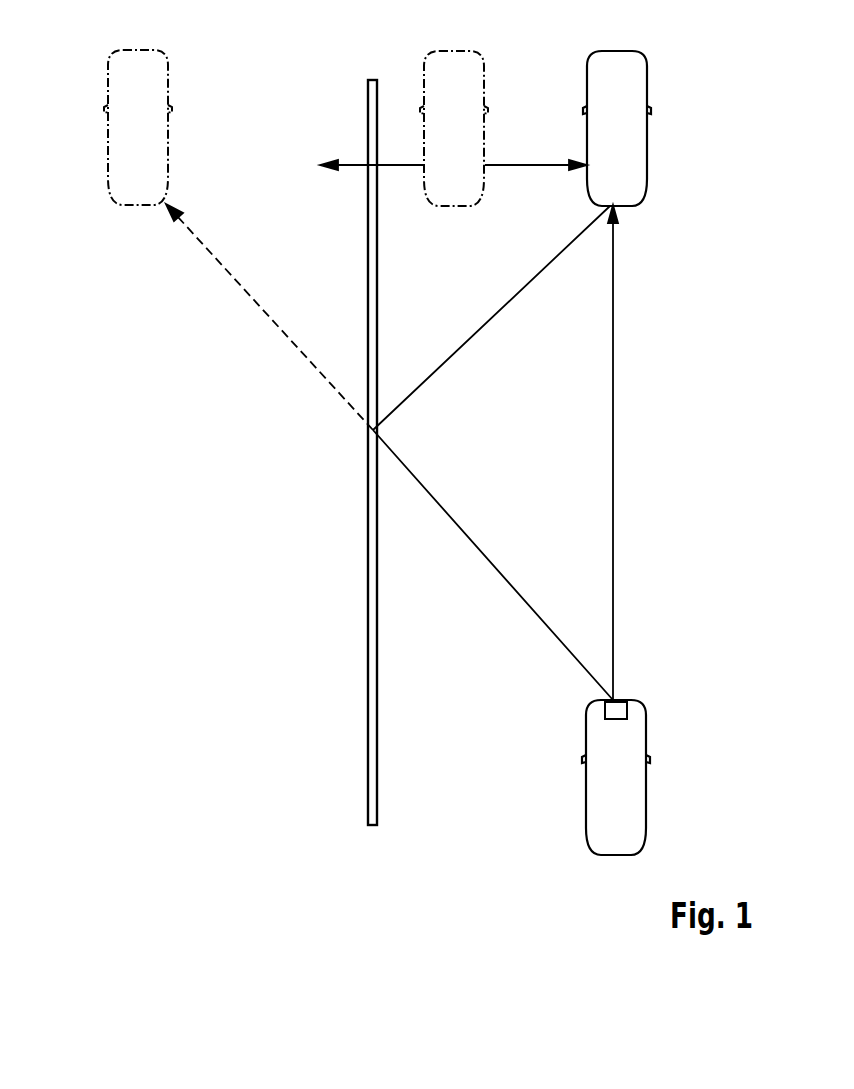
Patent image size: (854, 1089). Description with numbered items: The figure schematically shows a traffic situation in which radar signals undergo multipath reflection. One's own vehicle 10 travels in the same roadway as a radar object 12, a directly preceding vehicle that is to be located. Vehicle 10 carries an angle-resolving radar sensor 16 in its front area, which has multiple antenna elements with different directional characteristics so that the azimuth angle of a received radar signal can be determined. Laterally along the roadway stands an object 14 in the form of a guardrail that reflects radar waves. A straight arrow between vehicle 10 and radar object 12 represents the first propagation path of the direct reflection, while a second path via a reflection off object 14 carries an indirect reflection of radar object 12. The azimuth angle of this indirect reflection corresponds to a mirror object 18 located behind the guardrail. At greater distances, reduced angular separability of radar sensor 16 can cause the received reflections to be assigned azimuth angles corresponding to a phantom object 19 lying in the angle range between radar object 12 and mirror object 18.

The own vehicle 10 is at (646, 800).
The radar object 12 is at (647, 150).
The object 14 is at (377, 797).
The radar sensor 16 is at (627, 710).
The mirror object 18 is at (108, 133).
The phantom object 19 is at (424, 67).